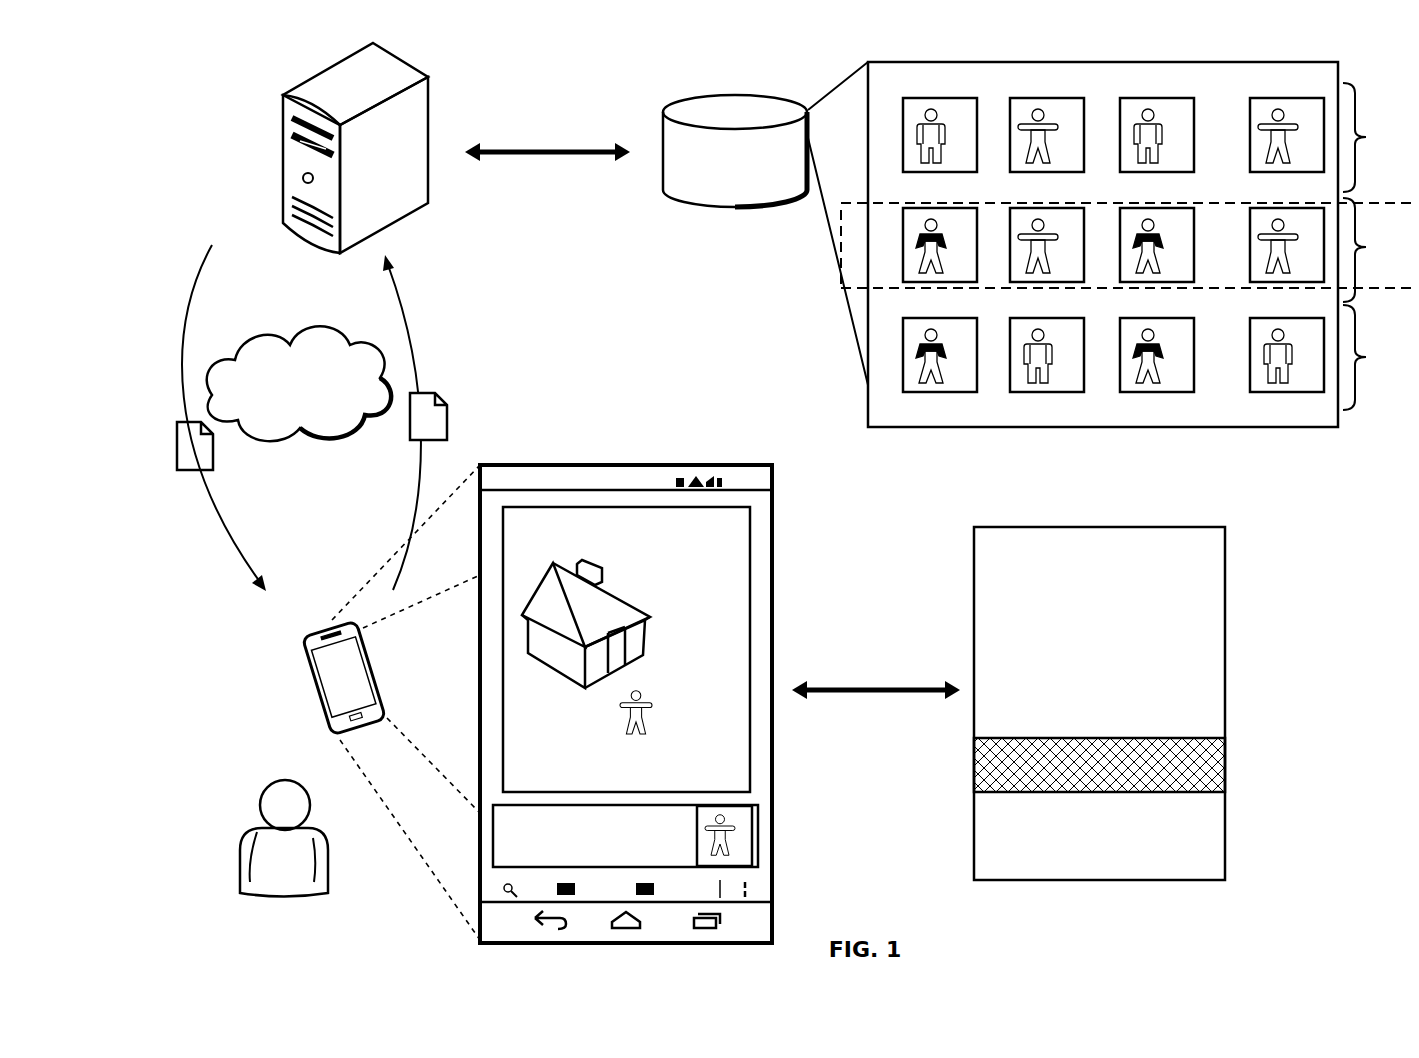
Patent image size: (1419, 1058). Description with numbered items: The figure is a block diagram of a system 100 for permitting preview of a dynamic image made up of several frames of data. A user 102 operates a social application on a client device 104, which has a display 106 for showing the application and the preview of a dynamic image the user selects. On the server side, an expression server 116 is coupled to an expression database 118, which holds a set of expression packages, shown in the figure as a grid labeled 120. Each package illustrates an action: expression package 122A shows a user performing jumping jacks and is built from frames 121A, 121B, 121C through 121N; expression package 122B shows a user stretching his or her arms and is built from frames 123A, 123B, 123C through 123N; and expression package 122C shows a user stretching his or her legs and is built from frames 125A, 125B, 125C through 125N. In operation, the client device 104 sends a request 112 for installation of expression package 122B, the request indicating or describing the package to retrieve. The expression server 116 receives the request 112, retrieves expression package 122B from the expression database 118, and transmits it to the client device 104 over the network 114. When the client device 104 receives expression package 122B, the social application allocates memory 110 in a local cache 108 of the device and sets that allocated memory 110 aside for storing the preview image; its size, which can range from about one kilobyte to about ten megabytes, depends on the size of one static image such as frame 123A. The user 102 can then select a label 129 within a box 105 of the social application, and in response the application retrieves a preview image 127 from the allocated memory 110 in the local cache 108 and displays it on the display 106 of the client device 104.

The system 100 is at (1290, 868).
The user 102 is at (240, 838).
The client device 104 is at (372, 660).
The box 105 is at (490, 848).
The display 106 is at (772, 573).
The local cache 108 is at (1210, 527).
The allocated memory 110 is at (1077, 738).
The request 112 is at (410, 420).
The network 114 is at (299, 383).
The expression server 116 is at (428, 90).
The expression database 118 is at (732, 207).
The expression package set 120 is at (1310, 427).
The frame 121A is at (960, 106).
The frame 121B is at (1067, 106).
The frame 121C is at (1177, 106).
The frame 121N is at (1308, 106).
The expression package 122A is at (1381, 137).
The expression package 122B is at (131, 482).
The expression package 122C is at (1381, 357).
The frame 123A is at (960, 216).
The frame 123B is at (1067, 216).
The frame 123C is at (1177, 216).
The frame 123N is at (1308, 216).
The frame 125A is at (960, 326).
The frame 125B is at (1067, 326).
The frame 125C is at (1177, 326).
The frame 125N is at (1308, 326).
The preview image 127 is at (750, 723).
The label 129 is at (725, 804).